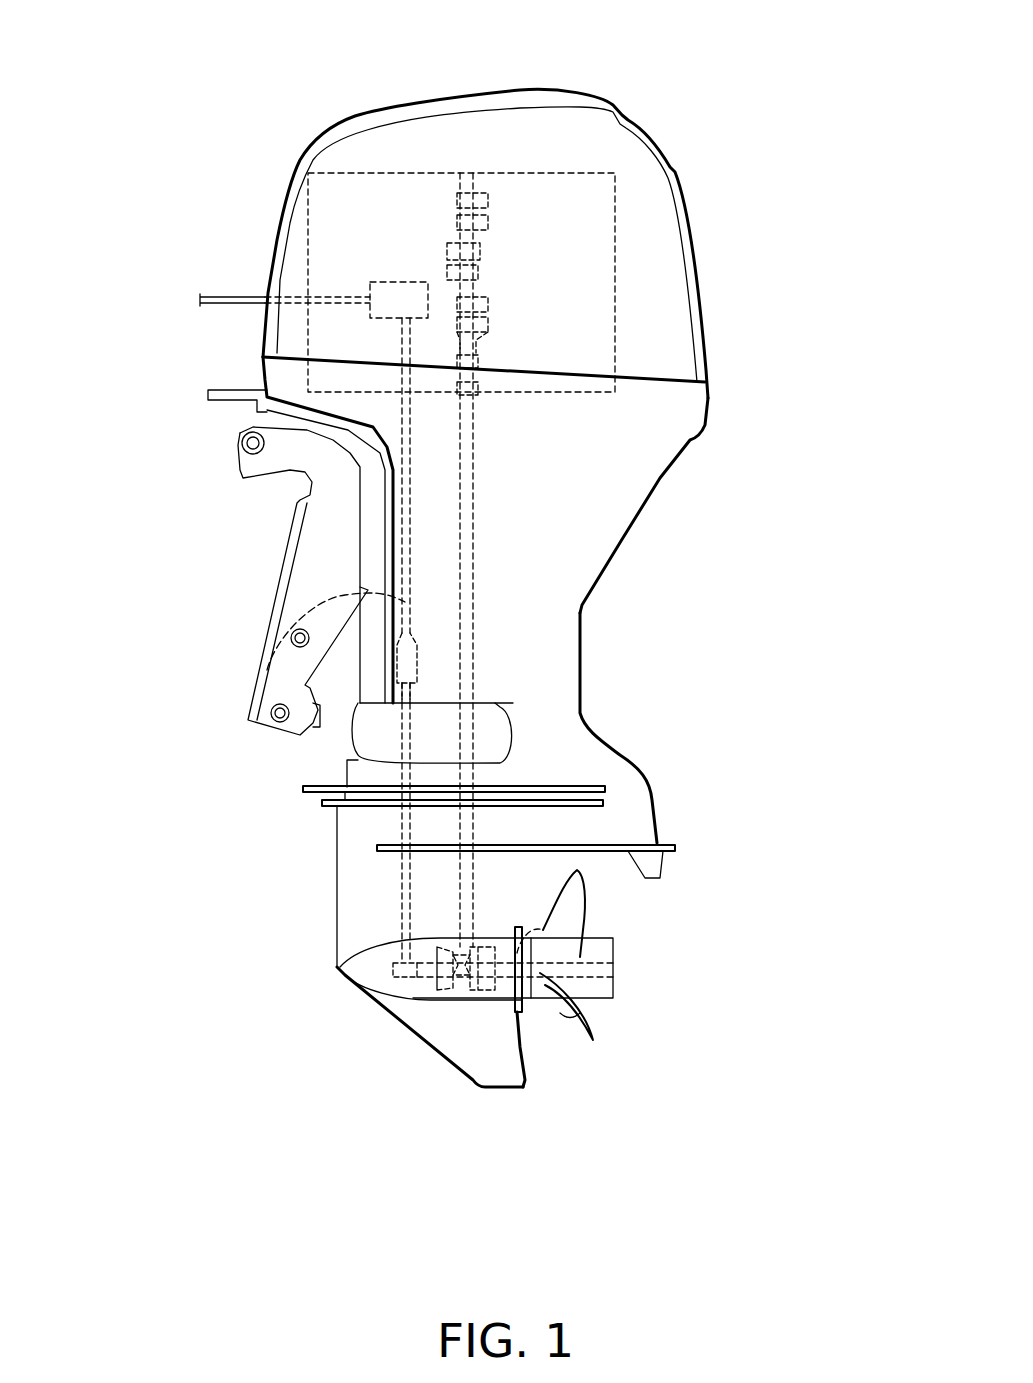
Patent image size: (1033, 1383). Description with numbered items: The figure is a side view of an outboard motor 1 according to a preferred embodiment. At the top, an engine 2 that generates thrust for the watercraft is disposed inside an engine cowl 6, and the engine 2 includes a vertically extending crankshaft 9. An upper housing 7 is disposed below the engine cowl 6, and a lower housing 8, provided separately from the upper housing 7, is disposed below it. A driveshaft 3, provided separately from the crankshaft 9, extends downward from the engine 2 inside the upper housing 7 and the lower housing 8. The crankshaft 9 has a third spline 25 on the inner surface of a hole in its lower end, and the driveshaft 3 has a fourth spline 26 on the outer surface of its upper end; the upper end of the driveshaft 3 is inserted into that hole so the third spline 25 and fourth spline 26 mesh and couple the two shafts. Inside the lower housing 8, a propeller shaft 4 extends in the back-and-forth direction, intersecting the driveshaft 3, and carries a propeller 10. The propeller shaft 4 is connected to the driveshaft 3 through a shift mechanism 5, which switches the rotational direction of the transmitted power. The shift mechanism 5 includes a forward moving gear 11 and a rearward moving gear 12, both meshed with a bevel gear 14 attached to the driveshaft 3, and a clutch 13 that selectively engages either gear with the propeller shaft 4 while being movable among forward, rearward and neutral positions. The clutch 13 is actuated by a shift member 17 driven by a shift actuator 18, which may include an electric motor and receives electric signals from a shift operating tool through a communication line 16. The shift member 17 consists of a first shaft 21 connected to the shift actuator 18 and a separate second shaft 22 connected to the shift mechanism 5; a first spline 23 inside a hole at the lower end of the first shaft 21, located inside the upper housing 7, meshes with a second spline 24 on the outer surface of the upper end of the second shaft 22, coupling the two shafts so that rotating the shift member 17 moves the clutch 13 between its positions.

The outboard motor 1 is at (270, 93).
The engine 2 is at (307, 240).
The driveshaft 3 is at (480, 570).
The propeller shaft 4 is at (530, 1003).
The shift mechanism 5 is at (417, 990).
The engine cowl 6 is at (680, 183).
The upper housing 7 is at (560, 627).
The lower housing 8 is at (353, 850).
The crankshaft 9 is at (480, 257).
The propeller 10 is at (567, 1023).
The forward moving gear 11 is at (447, 990).
The rearward moving gear 12 is at (483, 990).
The clutch 13 is at (463, 990).
The bevel gear 14 is at (560, 910).
The communication line 16 is at (233, 297).
The shift member 17 is at (170, 670).
The shift actuator 18 is at (383, 280).
The first shaft 21 is at (273, 670).
The second shaft 22 is at (363, 733).
The first spline 23 is at (417, 660).
The second spline 24 is at (417, 675).
The third spline 25 is at (460, 358).
The fourth spline 26 is at (478, 378).